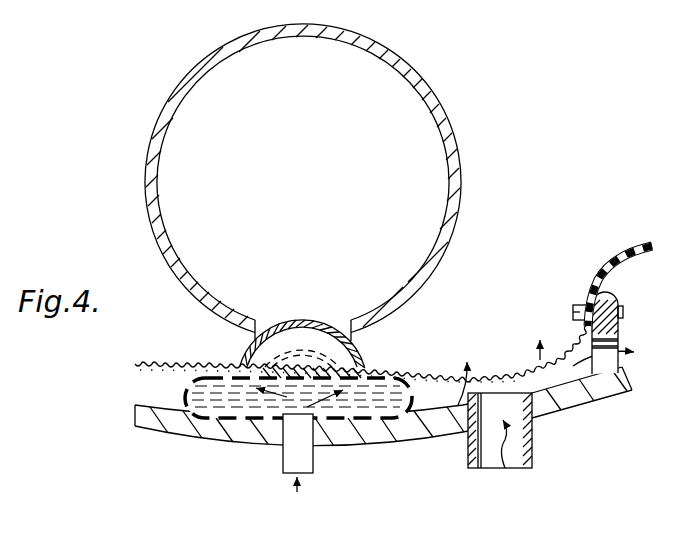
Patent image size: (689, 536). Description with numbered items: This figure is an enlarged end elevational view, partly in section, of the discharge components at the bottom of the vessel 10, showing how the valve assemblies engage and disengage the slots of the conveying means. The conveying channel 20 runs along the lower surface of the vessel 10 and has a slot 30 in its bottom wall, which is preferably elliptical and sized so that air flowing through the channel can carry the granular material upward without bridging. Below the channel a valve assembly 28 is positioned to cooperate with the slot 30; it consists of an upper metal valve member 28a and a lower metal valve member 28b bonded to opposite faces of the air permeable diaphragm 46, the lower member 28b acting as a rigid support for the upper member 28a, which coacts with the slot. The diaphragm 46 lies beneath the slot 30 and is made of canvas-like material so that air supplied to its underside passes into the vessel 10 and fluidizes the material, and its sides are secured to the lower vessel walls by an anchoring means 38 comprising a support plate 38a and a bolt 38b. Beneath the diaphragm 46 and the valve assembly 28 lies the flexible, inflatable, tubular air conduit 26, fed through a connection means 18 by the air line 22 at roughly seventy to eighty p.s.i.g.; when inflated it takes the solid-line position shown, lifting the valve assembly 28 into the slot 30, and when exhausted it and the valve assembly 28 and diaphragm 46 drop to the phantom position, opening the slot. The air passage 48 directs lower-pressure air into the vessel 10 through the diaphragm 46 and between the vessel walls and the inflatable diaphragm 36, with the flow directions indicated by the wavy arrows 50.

The vessel 10 is at (219, 433).
The connection means 18 is at (282, 420).
The conveying channel 20 is at (437, 103).
The air line 22 is at (309, 455).
The air conduit 26 is at (178, 387).
The valve assembly 28 is at (238, 338).
The upper metal valve member 28a is at (320, 333).
The lower metal valve member 28b is at (381, 369).
The slot 30 is at (263, 322).
The inflatable diaphragm 36 is at (617, 261).
The anchoring means 38 is at (620, 320).
The support plate 38a is at (621, 306).
The bolt 38b is at (574, 311).
The air permeable diaphragm 46 is at (447, 352).
The air passage 48 is at (534, 440).
The wavy arrows 50 is at (397, 465).